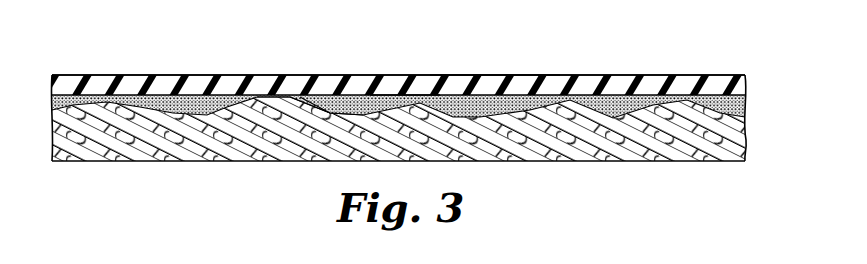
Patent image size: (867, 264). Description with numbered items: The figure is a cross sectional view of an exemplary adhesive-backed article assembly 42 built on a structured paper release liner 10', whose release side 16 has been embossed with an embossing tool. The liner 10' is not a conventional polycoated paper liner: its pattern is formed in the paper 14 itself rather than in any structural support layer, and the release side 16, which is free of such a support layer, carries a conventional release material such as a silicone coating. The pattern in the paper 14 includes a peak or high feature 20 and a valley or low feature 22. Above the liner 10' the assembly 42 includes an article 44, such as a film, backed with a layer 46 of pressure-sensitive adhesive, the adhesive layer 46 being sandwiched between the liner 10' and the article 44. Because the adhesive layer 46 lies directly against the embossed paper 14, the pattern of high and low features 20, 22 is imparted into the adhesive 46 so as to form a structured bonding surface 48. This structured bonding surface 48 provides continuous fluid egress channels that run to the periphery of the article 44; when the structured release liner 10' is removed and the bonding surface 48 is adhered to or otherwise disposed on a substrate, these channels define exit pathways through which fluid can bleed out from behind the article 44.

The release liner 10' is at (405, 149).
The paper 14 is at (218, 153).
The release side 16 is at (203, 93).
The peak or high feature 20 is at (402, 94).
The valley or low feature 22 is at (333, 101).
The adhesive-backed article assembly 42 is at (705, 43).
The article 44 is at (486, 86).
The adhesive layer 46 is at (745, 108).
The structured bonding surface 48 is at (292, 101).